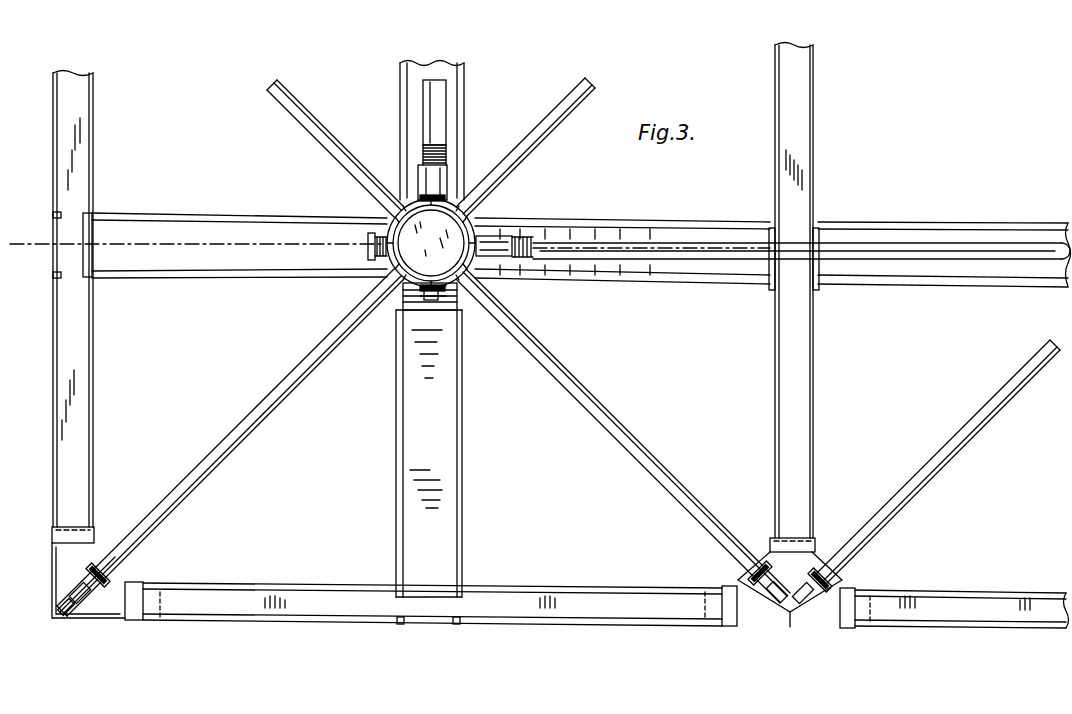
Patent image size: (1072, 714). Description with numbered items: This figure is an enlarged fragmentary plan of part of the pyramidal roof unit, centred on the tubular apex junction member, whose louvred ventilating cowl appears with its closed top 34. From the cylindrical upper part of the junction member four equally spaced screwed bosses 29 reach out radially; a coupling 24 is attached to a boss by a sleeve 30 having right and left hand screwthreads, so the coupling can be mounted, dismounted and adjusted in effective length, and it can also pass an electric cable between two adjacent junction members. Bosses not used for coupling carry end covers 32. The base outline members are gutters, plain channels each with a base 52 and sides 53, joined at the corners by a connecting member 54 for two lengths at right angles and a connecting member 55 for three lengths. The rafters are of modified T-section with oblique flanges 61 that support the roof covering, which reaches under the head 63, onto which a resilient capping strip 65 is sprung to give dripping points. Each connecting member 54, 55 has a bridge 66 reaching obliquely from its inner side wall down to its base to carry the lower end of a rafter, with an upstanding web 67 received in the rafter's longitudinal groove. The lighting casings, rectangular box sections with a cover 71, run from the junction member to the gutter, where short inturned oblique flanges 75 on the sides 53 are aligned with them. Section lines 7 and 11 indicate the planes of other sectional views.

The section line 7- 7 is at (590, 85).
The section line 11- 11 is at (37, 230).
The coupling 24 is at (438, 90).
The screwed boss 29 is at (446, 300).
The sleeve 30 is at (485, 236).
The end cover 32 is at (370, 237).
The closed top 34 is at (398, 281).
The base 52 is at (75, 360).
The side 53 is at (58, 348).
The connecting member 54 is at (54, 566).
The connecting member 55 is at (815, 565).
The oblique flange 61 is at (232, 437).
The head 63 is at (110, 582).
The resilient capping strip 65 is at (272, 403).
The bridge 66 is at (66, 590).
The web 67 is at (88, 600).
The cover 71 is at (222, 235).
The inturned oblique flange 75 is at (56, 214).